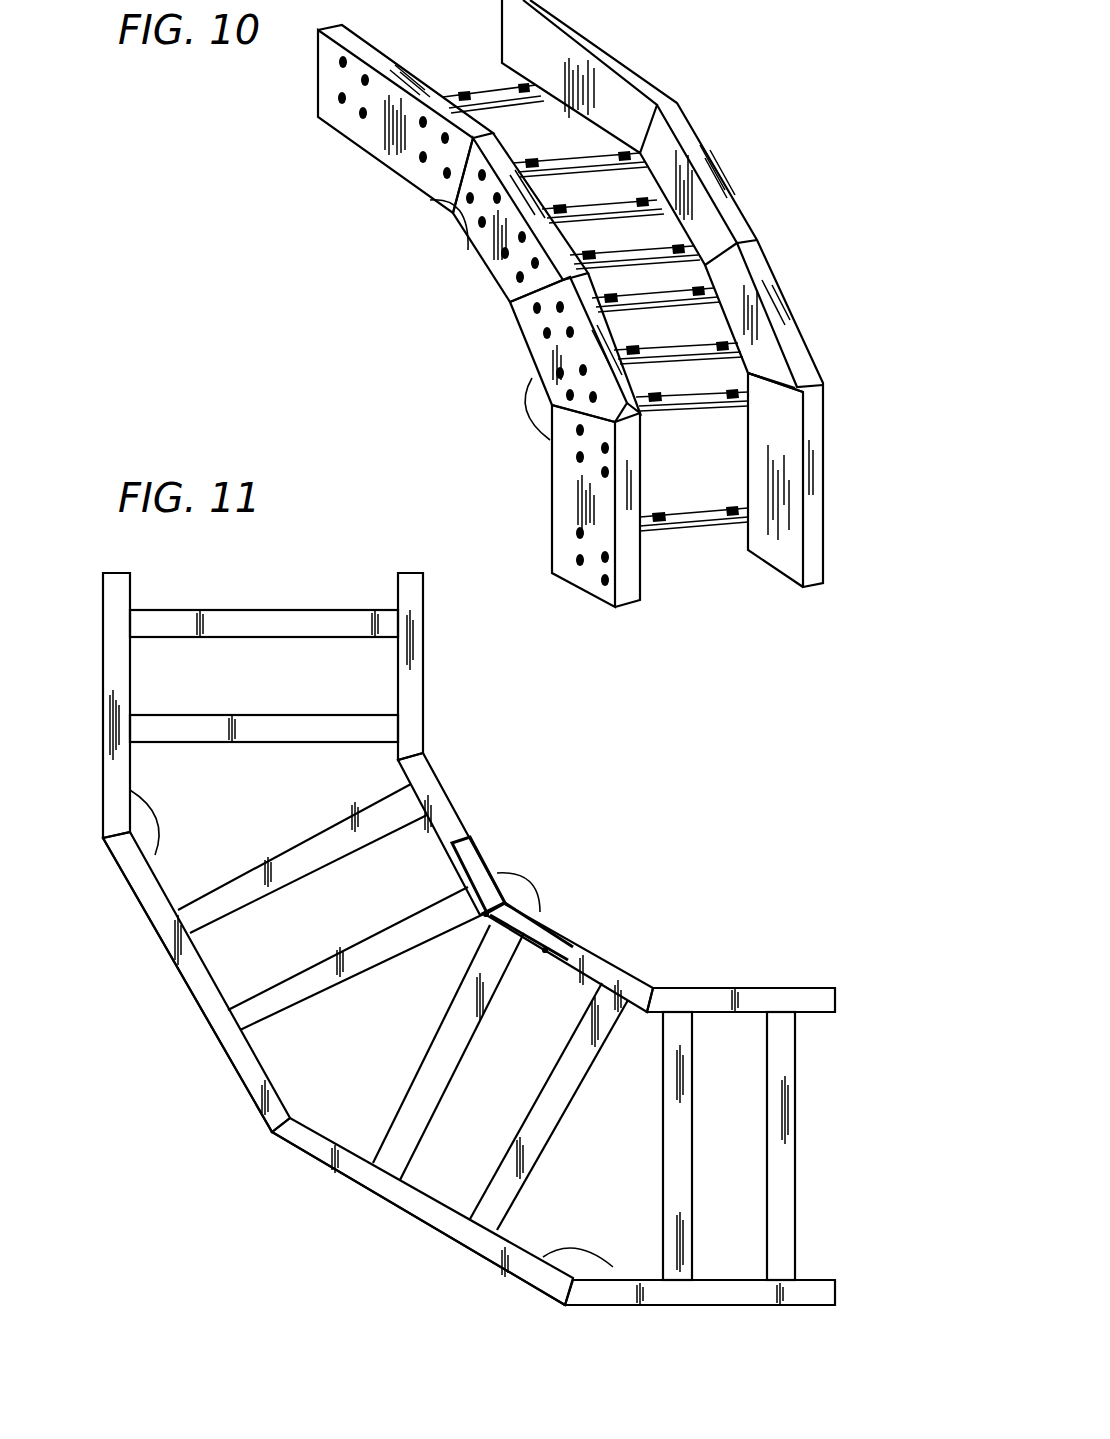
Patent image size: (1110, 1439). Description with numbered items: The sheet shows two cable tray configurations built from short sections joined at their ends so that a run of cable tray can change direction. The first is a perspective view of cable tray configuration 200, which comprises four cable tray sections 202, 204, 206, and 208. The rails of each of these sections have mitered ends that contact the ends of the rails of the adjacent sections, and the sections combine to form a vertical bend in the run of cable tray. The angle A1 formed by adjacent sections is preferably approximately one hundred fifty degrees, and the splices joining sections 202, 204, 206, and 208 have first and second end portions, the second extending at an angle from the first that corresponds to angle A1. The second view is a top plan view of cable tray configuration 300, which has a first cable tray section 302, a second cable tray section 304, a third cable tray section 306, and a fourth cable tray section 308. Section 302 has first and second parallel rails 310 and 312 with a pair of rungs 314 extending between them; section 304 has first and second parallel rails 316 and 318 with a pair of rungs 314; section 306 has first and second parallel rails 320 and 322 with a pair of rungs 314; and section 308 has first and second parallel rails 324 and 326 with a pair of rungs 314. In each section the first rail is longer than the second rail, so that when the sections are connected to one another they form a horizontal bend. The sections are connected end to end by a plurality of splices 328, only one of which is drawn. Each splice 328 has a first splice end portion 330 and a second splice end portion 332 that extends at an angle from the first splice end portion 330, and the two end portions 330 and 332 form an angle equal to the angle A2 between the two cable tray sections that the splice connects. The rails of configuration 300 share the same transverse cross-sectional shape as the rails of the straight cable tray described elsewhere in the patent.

In FIG. 10, the cable tray configuration 200 is at (542, 303).
In FIG. 10, the cable tray section 202 is at (558, 490).
In FIG. 10, the cable tray section 204 is at (538, 352).
In FIG. 10, the cable tray section 206 is at (498, 272).
In FIG. 10, the cable tray section 208 is at (358, 132).
In FIG. 10, the angle formed by adjacent sections A1 is at (490, 327).
In FIG. 11, the cable tray configuration 300 is at (465, 932).
In FIG. 11, the first cable tray section 302 is at (281, 705).
In FIG. 11, the second cable tray section 304 is at (197, 1003).
In FIG. 11, the third cable tray section 306 is at (467, 1250).
In FIG. 11, the fourth cable tray section 308 is at (759, 972).
In FIG. 11, the first rail 310 is at (108, 770).
In FIG. 11, the second rail 312 is at (410, 697).
In FIG. 11, the rungs 314 is at (240, 622).
In FIG. 11, the first rail 316 is at (247, 1077).
In FIG. 11, the second rail 318 is at (430, 788).
In FIG. 11, the first rail 320 is at (373, 1177).
In FIG. 11, the second rail 322 is at (597, 960).
In FIG. 11, the first rail 324 is at (805, 1285).
In FIG. 11, the second rail 326 is at (700, 985).
In FIG. 11, the splice 328 is at (480, 850).
In FIG. 11, the first splice end portion 330 is at (483, 915).
In FIG. 11, the second splice end portion 332 is at (543, 953).
In FIG. 11, the angle between the two cable tray sections A2 is at (371, 1028).